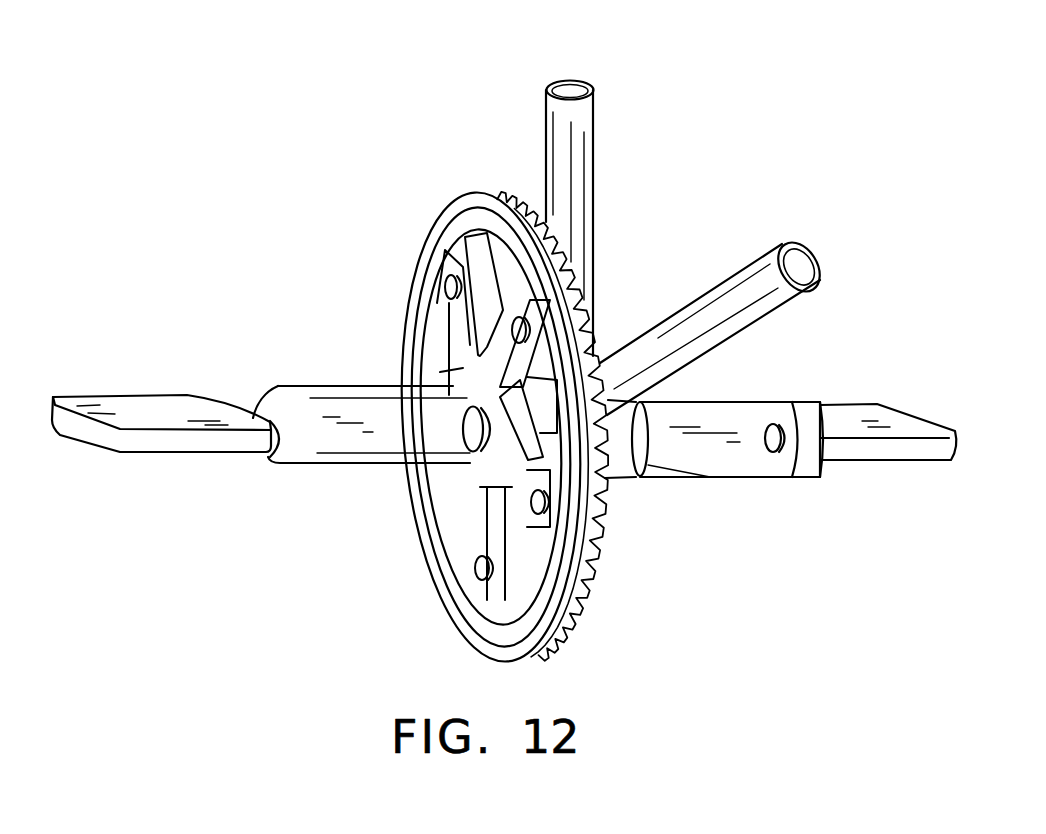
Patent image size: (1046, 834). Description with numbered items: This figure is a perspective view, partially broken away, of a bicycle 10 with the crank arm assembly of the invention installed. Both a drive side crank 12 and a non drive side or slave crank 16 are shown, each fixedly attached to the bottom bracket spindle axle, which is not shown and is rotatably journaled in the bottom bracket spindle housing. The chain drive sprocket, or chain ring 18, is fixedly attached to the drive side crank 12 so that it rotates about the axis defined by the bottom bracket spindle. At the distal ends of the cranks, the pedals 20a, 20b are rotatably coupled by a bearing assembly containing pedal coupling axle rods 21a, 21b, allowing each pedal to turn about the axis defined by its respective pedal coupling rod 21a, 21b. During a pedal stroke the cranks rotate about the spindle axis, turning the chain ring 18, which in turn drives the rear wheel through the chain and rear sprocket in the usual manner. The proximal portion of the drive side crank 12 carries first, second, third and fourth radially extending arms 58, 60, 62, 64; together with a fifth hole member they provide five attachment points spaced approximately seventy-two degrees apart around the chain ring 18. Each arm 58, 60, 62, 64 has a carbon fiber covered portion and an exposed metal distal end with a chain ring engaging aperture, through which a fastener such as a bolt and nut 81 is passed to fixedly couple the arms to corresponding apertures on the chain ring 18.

The bicycle 10 is at (740, 160).
The drive side crank 12 is at (308, 388).
The non drive side crank 16 is at (702, 481).
The chain drive sprocket 18 is at (466, 201).
The pedal 20a is at (150, 407).
The pedal 20b is at (847, 418).
The pedal coupling axle rod 21a is at (278, 433).
The pedal coupling axle rod 21b is at (766, 443).
The first radially extending arm 58 is at (463, 369).
The second radially extending arm 60 is at (502, 371).
The third radially extending arm 62 is at (517, 487).
The fourth radially extending arm 64 is at (483, 547).
The bolt and nut 81 is at (440, 290).